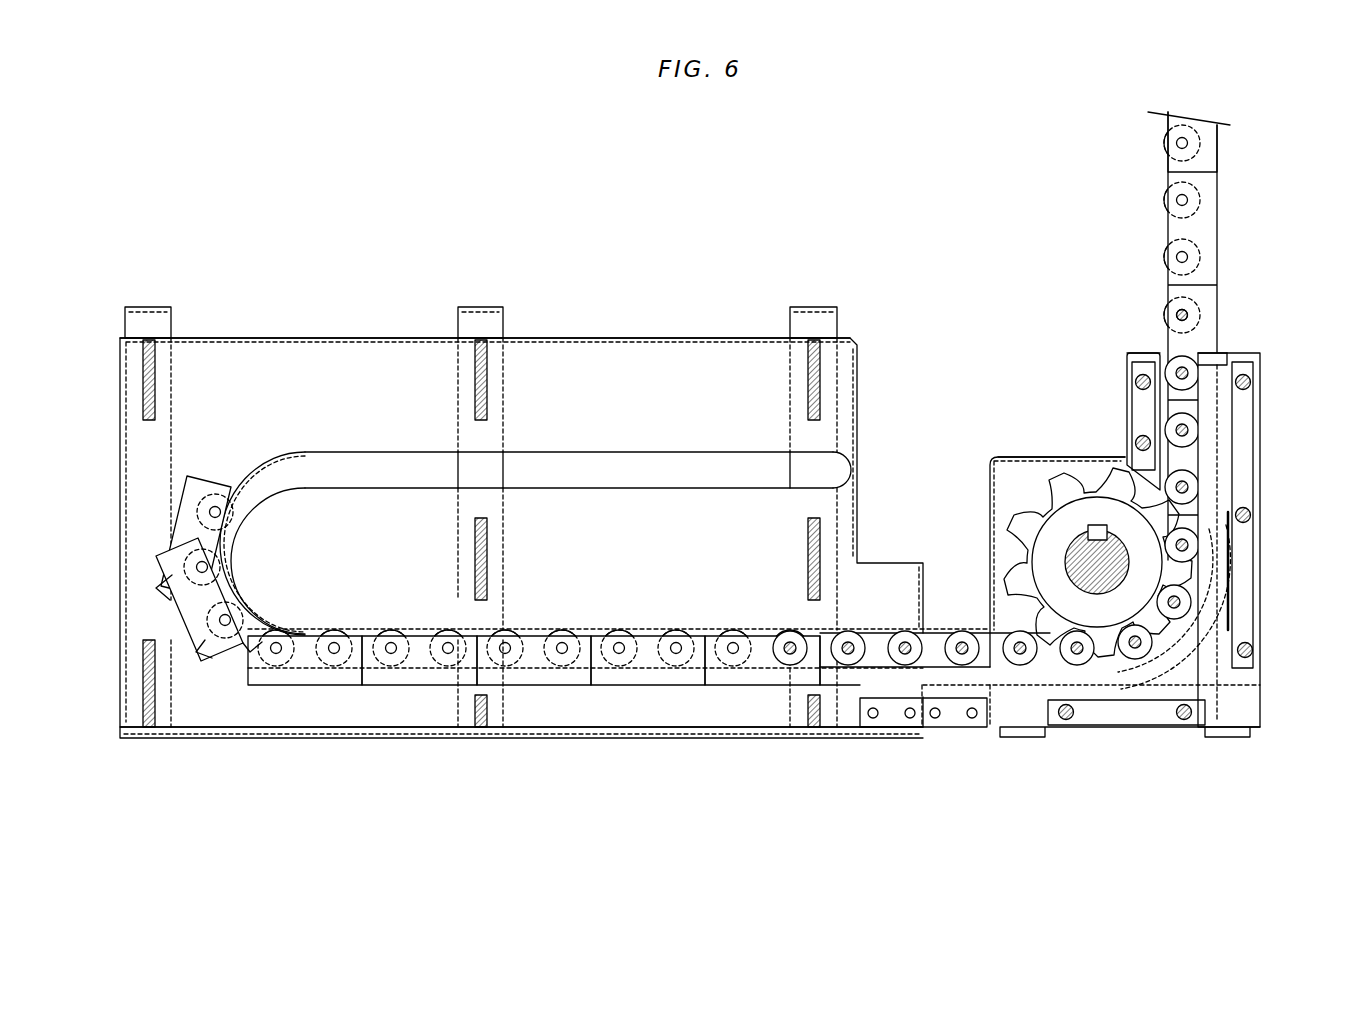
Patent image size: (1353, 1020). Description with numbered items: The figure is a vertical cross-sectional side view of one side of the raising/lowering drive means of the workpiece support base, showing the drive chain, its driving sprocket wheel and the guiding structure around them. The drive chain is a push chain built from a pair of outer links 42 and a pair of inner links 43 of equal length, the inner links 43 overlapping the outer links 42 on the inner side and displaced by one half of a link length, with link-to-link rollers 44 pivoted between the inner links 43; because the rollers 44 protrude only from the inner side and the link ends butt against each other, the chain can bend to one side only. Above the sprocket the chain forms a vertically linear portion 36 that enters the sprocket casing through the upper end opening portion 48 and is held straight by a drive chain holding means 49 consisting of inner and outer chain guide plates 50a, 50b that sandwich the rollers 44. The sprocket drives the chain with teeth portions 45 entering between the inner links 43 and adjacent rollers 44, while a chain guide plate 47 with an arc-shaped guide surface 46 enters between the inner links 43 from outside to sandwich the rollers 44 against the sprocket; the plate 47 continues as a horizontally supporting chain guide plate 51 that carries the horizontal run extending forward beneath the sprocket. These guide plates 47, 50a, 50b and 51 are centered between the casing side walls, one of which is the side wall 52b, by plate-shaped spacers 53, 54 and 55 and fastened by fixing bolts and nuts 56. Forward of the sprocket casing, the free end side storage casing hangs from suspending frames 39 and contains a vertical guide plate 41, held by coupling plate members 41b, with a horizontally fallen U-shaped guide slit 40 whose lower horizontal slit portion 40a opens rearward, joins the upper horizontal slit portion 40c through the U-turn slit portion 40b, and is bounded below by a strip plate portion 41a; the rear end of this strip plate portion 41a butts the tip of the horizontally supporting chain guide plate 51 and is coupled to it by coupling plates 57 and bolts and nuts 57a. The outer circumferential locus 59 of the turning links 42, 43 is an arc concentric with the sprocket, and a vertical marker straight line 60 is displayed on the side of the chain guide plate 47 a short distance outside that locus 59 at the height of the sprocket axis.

The vertically linear portion 36 is at (1222, 200).
The suspending frame 39 is at (148, 320).
The U-shaped guide slit 40 is at (660, 490).
The lower horizontal slit portion 40a is at (405, 632).
The U-turn slit portion 40b is at (238, 478).
The upper horizontal slit portion 40c is at (550, 468).
The vertical guide plate 41 is at (632, 355).
The strip plate portion 41a is at (680, 712).
The coupling plate member 41b is at (156, 378).
The outer link 42 is at (312, 688).
The inner link 43 is at (185, 520).
The link-to-link roller 44 is at (222, 565).
The teeth portion 45 is at (1068, 490).
The guide surface 46 is at (1130, 605).
The chain guide plate 47 is at (1235, 700).
The upper end opening portion 48 is at (1190, 316).
The drive chain holding means 49 is at (1125, 390).
The chain guide plate 50a is at (1218, 400).
The chain guide plate 50b is at (1218, 440).
The horizontally supporting chain guide plate 51 is at (1010, 687).
The side wall 52b is at (1008, 475).
The plate-shaped spacer 53 is at (1140, 353).
The plate-shaped spacer 54 is at (1258, 585).
The plate-shaped spacer 55 is at (1125, 725).
The fixing bolt and nut 56 is at (1250, 380).
The coupling plate 57 is at (910, 718).
The bolt and nut 57a is at (972, 718).
The outer circumferential locus 59 is at (1225, 700).
The marker straight line 60 is at (1232, 560).